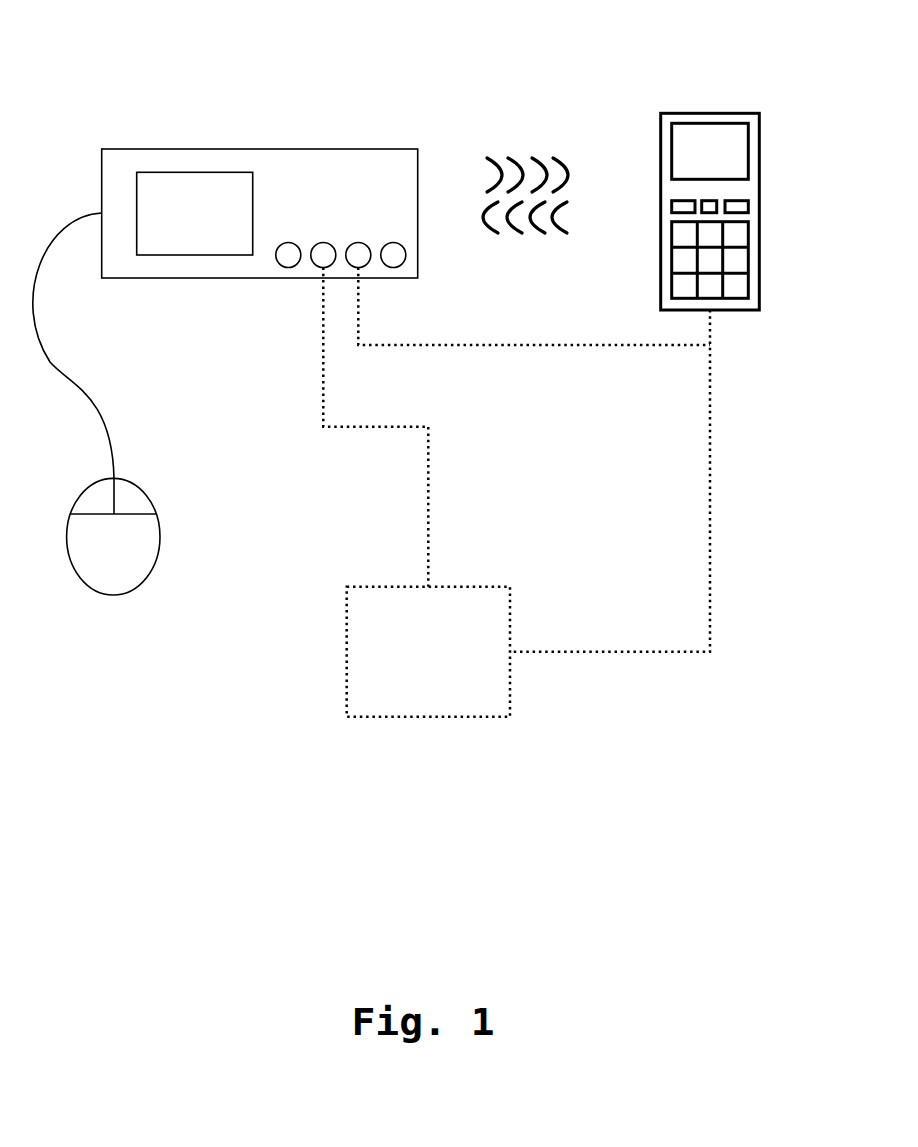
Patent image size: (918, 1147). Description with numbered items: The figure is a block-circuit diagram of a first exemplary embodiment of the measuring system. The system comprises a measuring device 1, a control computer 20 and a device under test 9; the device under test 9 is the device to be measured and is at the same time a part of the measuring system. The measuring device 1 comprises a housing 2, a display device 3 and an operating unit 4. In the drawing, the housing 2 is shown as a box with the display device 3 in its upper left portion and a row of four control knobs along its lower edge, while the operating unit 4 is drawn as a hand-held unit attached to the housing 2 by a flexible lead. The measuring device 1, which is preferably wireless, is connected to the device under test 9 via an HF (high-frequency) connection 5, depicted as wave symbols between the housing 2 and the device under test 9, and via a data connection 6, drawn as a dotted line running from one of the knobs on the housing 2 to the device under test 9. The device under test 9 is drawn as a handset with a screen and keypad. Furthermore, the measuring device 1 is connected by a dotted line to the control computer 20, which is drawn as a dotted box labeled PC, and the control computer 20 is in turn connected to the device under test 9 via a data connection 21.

The measuring device 1 is at (96, 83).
The housing 2 is at (252, 279).
The display device 3 is at (172, 256).
The operating unit 4 is at (113, 595).
The HF connection 5 is at (542, 158).
The data connection 6 is at (532, 345).
The device under test 9 is at (747, 112).
The control computer 20 is at (382, 718).
The data connection 21 is at (710, 448).